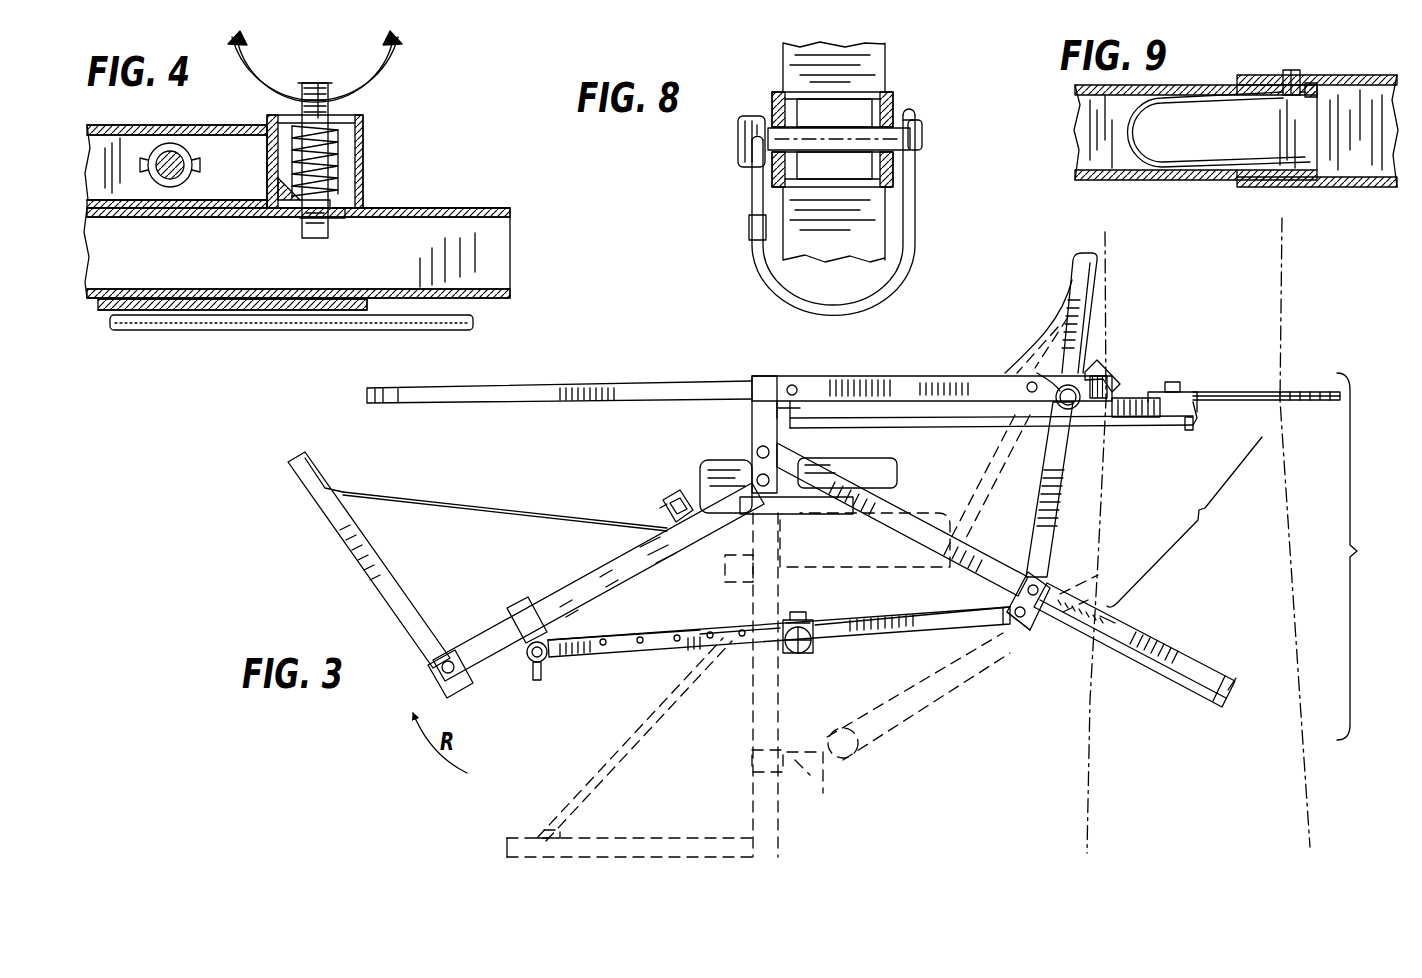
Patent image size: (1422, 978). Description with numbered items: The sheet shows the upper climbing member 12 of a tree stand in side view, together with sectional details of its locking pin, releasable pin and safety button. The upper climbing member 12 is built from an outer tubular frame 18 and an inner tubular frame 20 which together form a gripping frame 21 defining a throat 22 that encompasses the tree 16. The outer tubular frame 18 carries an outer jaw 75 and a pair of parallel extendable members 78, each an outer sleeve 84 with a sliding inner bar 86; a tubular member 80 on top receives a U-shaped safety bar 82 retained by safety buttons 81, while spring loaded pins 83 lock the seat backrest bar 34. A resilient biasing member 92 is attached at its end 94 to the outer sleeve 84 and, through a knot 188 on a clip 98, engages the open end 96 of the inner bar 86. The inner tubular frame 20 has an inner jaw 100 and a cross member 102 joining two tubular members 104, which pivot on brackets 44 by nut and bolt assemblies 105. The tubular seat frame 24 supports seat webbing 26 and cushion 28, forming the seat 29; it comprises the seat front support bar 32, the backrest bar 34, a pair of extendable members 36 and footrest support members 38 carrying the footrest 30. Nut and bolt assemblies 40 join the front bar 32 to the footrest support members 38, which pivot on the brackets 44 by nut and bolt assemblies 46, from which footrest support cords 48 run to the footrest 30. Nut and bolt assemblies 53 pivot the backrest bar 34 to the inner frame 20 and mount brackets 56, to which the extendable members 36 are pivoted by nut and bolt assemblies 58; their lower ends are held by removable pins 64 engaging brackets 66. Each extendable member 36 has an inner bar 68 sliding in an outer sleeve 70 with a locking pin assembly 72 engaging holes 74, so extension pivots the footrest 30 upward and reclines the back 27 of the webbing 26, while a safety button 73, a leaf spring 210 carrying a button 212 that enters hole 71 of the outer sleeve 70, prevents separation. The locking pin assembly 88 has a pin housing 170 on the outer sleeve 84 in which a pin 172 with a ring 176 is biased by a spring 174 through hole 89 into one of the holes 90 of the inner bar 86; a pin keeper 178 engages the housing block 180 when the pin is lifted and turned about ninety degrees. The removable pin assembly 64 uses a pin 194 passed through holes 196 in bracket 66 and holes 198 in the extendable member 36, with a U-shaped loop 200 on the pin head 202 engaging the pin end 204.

In FIG. 3, the upper climbing member 12 is at (288, 518).
In FIG. 3, the tree 16 is at (1250, 323).
In FIG. 4, the outer tubular frame 18 is at (512, 251).
In FIG. 3, the outer tubular frame 18 is at (843, 372).
In FIG. 3, the inner tubular frame 20 is at (1148, 676).
In FIG. 3, the gripping frame 21 is at (1389, 560).
In FIG. 3, the throat 22 is at (1227, 542).
In FIG. 3, the tubular seat frame 24 is at (873, 650).
In FIG. 3, the seat webbing 26 is at (907, 478).
In FIG. 3, the back 27 is at (1034, 314).
In FIG. 3, the cushion 28 is at (853, 463).
In FIG. 3, the seat 29 is at (830, 518).
In FIG. 3, the footrest 30 is at (350, 555).
In FIG. 3, the seat front support bar 32 is at (650, 508).
In FIG. 3, the seat backrest bar 34 is at (1087, 331).
In FIG. 3, the extendable members 36 is at (612, 665).
In FIG. 8, the footrest support members 38 is at (805, 55).
In FIG. 3, the footrest support members 38 is at (590, 578).
In FIG. 3, the nut and bolt assemblies 40 is at (673, 490).
In FIG. 3, the brackets 44 is at (755, 426).
In FIG. 3, the nut and bolt assemblies 46 is at (742, 516).
In FIG. 3, the footrest support cords 48 is at (483, 506).
In FIG. 3, the nut and bolt assemblies 53 is at (1050, 575).
In FIG. 3, the brackets 56 is at (1036, 628).
In FIG. 3, the nut and bolt assemblies 58 is at (1008, 600).
In FIG. 8, the removable pin assembly 64 is at (724, 153).
In FIG. 3, the removable pin assembly 64 is at (528, 661).
In FIG. 8, the brackets 66 is at (907, 184).
In FIG. 3, the brackets 66 is at (528, 604).
In FIG. 8, the inner bar 68 is at (820, 247).
In FIG. 9, the inner bar 68 is at (1183, 178).
In FIG. 3, the inner bar 68 is at (657, 635).
In FIG. 9, the outer sleeve 70 is at (1363, 82).
In FIG. 3, the outer sleeve 70 is at (920, 608).
In FIG. 9, the hole 71 is at (1316, 86).
In FIG. 3, the locking pin assembly 72 is at (800, 658).
In FIG. 9, the safety button 73 is at (1307, 54).
In FIG. 3, the safety button 73 is at (803, 605).
In FIG. 3, the holes 74 is at (735, 630).
In FIG. 3, the outer jaw 75 is at (1324, 388).
In FIG. 4, the extendable members 78 is at (138, 224).
In FIG. 3, the tubular member 80 is at (905, 377).
In FIG. 3, the safety buttons 81 is at (792, 385).
In FIG. 3, the safety bar 82 is at (575, 383).
In FIG. 3, the spring loaded pins 83 is at (1022, 352).
In FIG. 4, the outer sleeve 84 is at (362, 207).
In FIG. 3, the outer sleeve 84 is at (1100, 426).
In FIG. 4, the inner bar 86 is at (442, 209).
In FIG. 3, the inner bar 86 is at (1145, 426).
In FIG. 4, the locking pin assembly 88 is at (371, 90).
In FIG. 3, the locking pin assembly 88 is at (1106, 368).
In FIG. 4, the hole 89 is at (312, 238).
In FIG. 4, the holes 90 is at (198, 224).
In FIG. 4, the resilient biasing member 92 is at (214, 332).
In FIG. 3, the resilient biasing member 92 is at (994, 436).
In FIG. 3, the end 94 is at (796, 426).
In FIG. 3, the end 96 is at (1198, 384).
In FIG. 3, the clip 98 is at (1199, 413).
In FIG. 3, the inner jaw 100 is at (1183, 700).
In FIG. 3, the cross member 102 is at (1103, 592).
In FIG. 3, the tubular members 104 is at (1216, 675).
In FIG. 3, the nut and bolt assemblies 105 is at (755, 450).
In FIG. 4, the pin housing 170 is at (364, 136).
In FIG. 4, the pin 172 is at (317, 241).
In FIG. 4, the spring 174 is at (338, 165).
In FIG. 4, the ring 176 is at (267, 74).
In FIG. 4, the pin keeper 178 is at (292, 218).
In FIG. 4, the housing block 180 is at (268, 178).
In FIG. 3, the knot 188 is at (1194, 432).
In FIG. 8, the pin 194 is at (887, 94).
In FIG. 8, the holes 196 is at (897, 161).
In FIG. 8, the holes 198 is at (803, 162).
In FIG. 8, the U-shaped loop 200 is at (768, 286).
In FIG. 8, the pin head 202 is at (752, 114).
In FIG. 8, the pin end 204 is at (922, 132).
In FIG. 9, the leaf spring 210 is at (1133, 135).
In FIG. 9, the button 212 is at (1284, 70).